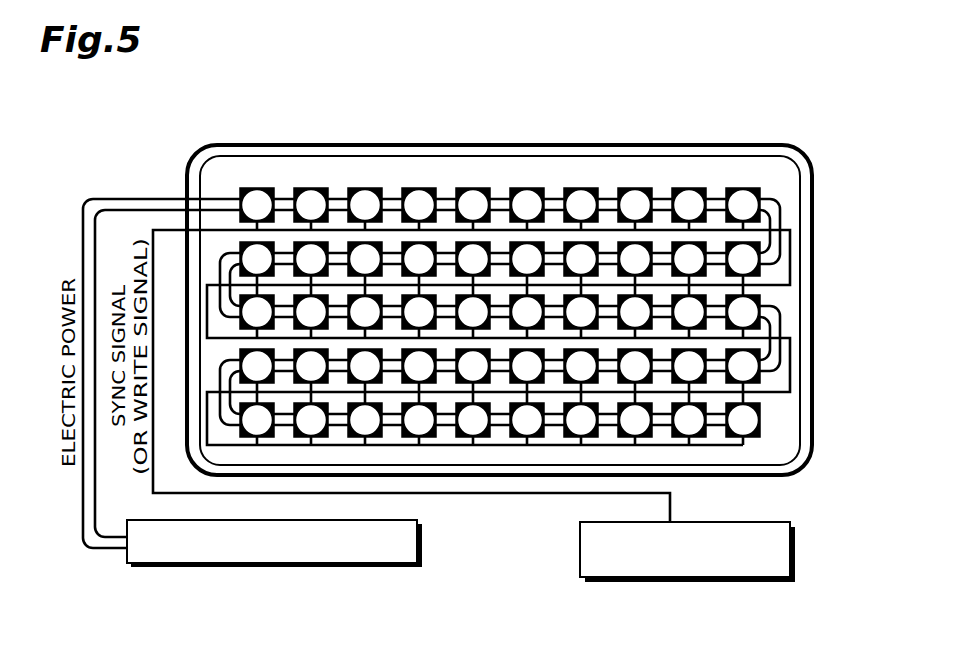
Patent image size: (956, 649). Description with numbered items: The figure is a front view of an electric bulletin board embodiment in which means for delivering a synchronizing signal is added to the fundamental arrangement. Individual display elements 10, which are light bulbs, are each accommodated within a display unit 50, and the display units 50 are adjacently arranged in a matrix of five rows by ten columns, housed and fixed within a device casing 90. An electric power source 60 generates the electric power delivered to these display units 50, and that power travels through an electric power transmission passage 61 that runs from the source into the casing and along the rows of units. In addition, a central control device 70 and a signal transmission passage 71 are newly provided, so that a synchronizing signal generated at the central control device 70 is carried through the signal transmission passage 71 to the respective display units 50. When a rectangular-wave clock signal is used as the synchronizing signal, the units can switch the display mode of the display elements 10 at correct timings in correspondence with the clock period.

The display element 10 is at (258, 203).
The display unit 50 is at (247, 187).
The device casing 90 is at (602, 145).
The electric power source 60 is at (420, 552).
The central control device 70 is at (580, 544).
The electric power transmission passage 61 is at (104, 549).
The signal transmission passage 71 is at (500, 493).